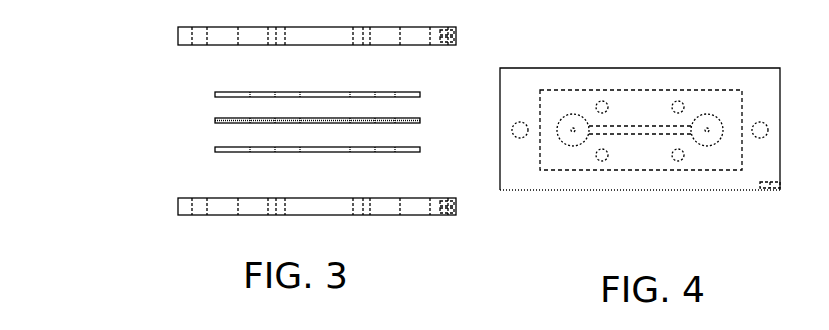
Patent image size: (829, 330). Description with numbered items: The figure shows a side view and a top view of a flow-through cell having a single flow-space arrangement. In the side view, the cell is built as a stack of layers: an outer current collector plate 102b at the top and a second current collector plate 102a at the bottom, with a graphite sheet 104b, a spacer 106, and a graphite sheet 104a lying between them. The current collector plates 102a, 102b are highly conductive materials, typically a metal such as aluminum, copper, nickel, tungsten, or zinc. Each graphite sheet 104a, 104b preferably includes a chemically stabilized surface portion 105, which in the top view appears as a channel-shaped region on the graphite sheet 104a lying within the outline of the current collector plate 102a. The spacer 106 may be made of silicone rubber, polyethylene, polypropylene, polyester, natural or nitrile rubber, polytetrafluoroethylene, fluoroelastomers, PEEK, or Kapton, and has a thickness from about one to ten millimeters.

In FIG. 3, the current collector plate 102a is at (178, 203).
In FIG. 4, the current collector plate 102a is at (732, 188).
In FIG. 3, the current collector plate 102b is at (178, 33).
In FIG. 3, the graphite sheet 104a is at (215, 148).
In FIG. 4, the graphite sheet 104a is at (678, 170).
In FIG. 3, the graphite sheet 104b is at (215, 92).
In FIG. 4, the chemically stabilized surface portion 105 is at (642, 130).
In FIG. 3, the spacer 106 is at (215, 119).